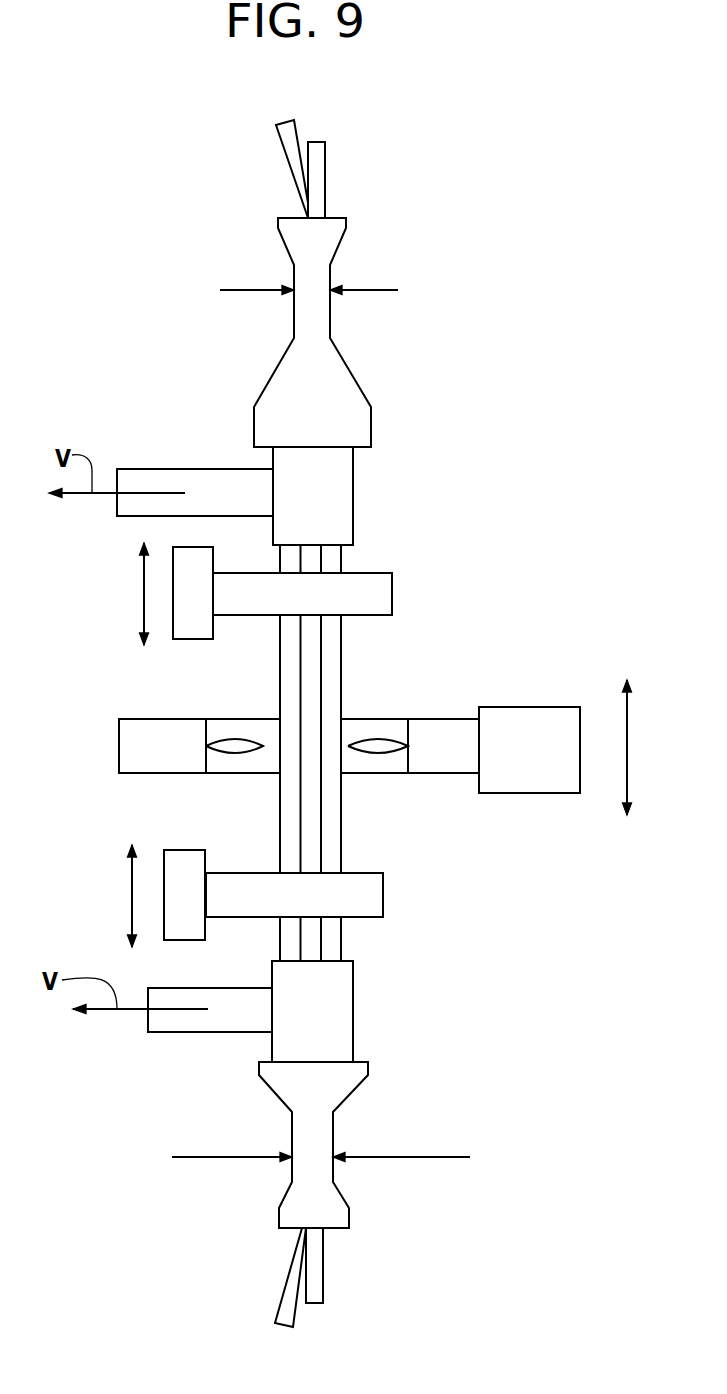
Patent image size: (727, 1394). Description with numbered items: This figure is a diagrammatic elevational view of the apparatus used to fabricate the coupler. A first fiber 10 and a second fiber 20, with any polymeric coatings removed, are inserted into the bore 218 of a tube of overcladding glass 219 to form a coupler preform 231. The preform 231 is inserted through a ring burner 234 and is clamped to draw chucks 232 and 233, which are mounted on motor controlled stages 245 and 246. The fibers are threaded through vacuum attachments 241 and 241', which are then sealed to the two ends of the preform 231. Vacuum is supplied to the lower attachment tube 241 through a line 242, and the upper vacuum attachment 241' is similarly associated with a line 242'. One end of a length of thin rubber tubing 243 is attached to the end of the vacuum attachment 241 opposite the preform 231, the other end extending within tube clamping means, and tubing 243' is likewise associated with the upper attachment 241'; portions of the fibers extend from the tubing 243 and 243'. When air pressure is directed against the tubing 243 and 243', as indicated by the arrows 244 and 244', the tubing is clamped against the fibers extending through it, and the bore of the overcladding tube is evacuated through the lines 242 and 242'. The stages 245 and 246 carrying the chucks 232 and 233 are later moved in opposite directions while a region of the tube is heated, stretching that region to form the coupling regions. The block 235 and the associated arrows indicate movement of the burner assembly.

The first fiber 10 is at (285, 159).
The second fiber 20 is at (325, 172).
The bore 218 is at (301, 675).
The tube of overcladding glass 219 is at (280, 700).
The coupler preform 231 is at (341, 820).
The draw chuck 232 is at (382, 600).
The draw chuck 233 is at (385, 899).
The ring burner 234 is at (433, 719).
The heater drive block 235 is at (526, 707).
The vacuum attachment 241 is at (352, 1011).
The upper vacuum attachment 241' is at (359, 496).
The line 242 is at (154, 1037).
The line 242' is at (195, 466).
The thin rubber tubing 243 is at (347, 1145).
The tubing 243' is at (361, 332).
The arrows 244 is at (311, 1180).
The arrows 244' is at (301, 272).
The motor controlled stage 245 is at (190, 547).
The motor controlled stage 246 is at (175, 848).